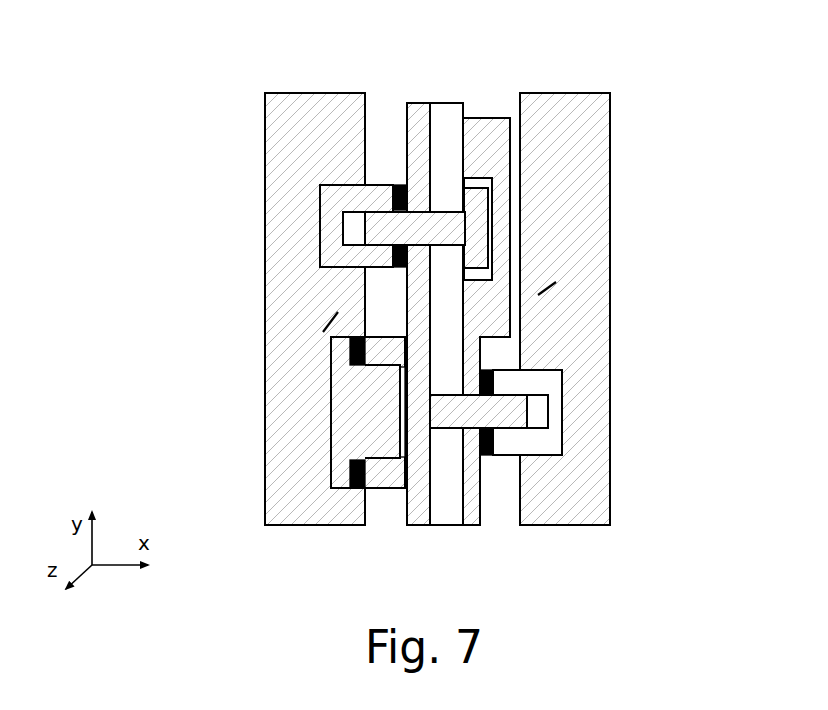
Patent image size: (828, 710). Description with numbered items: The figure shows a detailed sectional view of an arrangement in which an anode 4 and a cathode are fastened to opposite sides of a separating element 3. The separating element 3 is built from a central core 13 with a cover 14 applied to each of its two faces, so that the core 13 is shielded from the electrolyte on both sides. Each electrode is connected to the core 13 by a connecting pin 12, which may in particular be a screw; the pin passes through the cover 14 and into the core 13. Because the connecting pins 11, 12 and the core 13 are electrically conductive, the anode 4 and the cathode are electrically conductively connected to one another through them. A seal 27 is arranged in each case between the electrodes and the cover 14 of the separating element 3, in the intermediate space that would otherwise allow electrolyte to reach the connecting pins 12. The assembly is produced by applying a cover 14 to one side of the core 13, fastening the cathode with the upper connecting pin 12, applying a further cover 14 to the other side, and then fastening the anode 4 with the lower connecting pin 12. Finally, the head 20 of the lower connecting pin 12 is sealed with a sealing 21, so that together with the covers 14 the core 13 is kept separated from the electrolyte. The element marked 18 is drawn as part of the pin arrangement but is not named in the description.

The separating element 3 is at (464, 262).
The anode 4 is at (610, 132).
The connecting pin 11 is at (403, 400).
The connecting pin 12 is at (375, 232).
The core 13 is at (441, 103).
The cover 14 is at (421, 105).
The pin 18 is at (356, 219).
The head 20 is at (488, 214).
The sealing 21 is at (333, 456).
The seal 27 is at (400, 186).